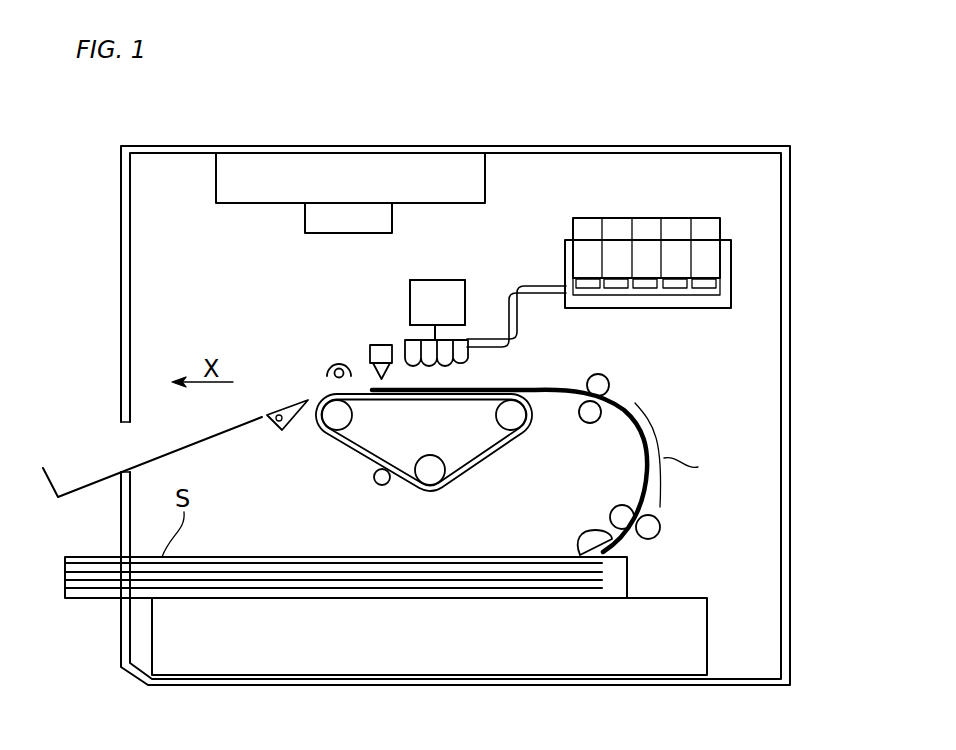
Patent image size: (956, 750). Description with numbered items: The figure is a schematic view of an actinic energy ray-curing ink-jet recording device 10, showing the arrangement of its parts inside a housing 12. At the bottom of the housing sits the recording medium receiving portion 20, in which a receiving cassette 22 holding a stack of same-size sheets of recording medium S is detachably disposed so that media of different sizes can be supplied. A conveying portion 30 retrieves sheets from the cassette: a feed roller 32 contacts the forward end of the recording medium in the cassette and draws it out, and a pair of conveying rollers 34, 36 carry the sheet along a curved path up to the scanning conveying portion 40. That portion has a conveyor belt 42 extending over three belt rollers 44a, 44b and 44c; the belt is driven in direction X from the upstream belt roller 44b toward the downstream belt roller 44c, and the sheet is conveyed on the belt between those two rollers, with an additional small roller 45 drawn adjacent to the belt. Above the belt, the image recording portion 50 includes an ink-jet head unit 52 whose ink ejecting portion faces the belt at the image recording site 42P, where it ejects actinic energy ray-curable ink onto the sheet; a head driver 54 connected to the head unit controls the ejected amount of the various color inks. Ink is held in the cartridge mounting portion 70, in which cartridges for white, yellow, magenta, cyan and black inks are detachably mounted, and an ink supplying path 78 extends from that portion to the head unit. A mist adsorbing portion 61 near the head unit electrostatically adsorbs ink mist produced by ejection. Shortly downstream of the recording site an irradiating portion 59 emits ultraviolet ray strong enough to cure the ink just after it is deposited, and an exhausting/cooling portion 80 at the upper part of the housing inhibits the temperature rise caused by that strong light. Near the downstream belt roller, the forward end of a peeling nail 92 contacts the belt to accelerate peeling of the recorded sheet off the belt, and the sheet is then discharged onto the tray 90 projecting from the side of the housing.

The ink-jet recording device 10 is at (672, 103).
The housing 12 is at (790, 180).
The recording medium receiving portion 20 is at (238, 542).
The receiving cassette 22 is at (76, 598).
The conveying portion 30 is at (553, 449).
The feed roller 32 is at (583, 533).
The conveying roller 34 is at (660, 527).
The conveying roller 36 is at (610, 384).
The scanning conveying portion 40 is at (443, 473).
The conveyor belt 42 is at (492, 456).
The image recording site 42P is at (450, 408).
The belt roller 44a is at (440, 482).
The upstream belt roller 44b is at (522, 423).
The downstream belt roller 44c is at (327, 430).
The pressing roller 45 is at (374, 484).
The image recording portion 50 is at (395, 280).
The ink-jet head 52 is at (405, 344).
The head driver 54 is at (436, 280).
The irradiating portion 59 is at (327, 376).
The mist adsorbing portion 61 is at (370, 350).
The cartridge mounting portion 70 is at (740, 175).
The ink supplying path 78 is at (528, 286).
The exhausting/cooling portion 80 is at (238, 228).
The tray 90 is at (74, 412).
The peeling nail 92 is at (276, 425).